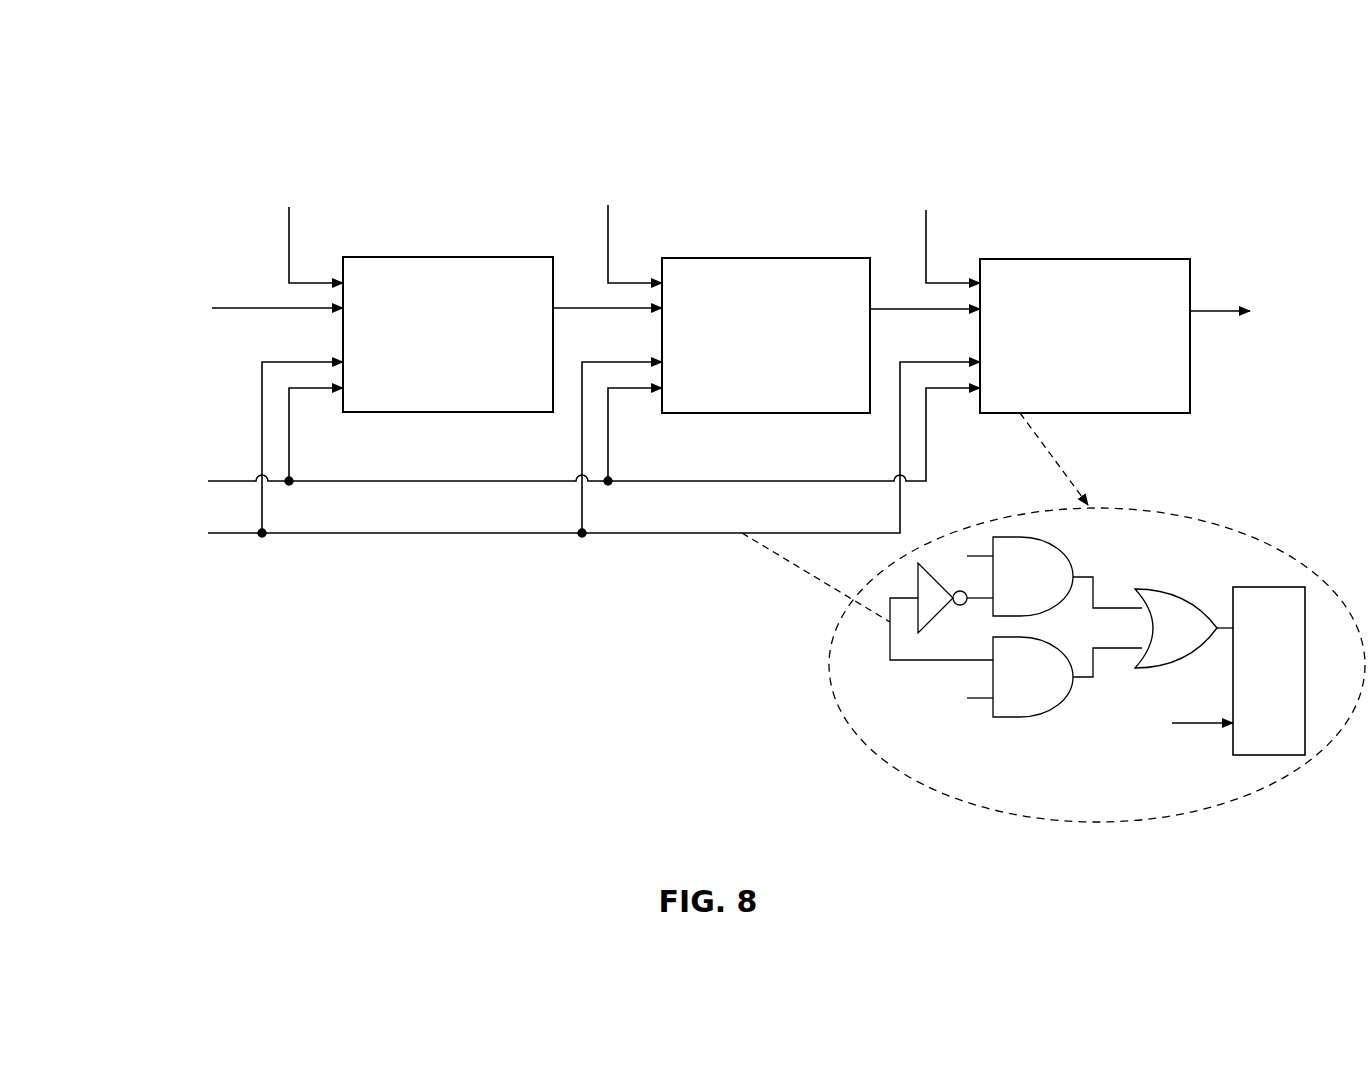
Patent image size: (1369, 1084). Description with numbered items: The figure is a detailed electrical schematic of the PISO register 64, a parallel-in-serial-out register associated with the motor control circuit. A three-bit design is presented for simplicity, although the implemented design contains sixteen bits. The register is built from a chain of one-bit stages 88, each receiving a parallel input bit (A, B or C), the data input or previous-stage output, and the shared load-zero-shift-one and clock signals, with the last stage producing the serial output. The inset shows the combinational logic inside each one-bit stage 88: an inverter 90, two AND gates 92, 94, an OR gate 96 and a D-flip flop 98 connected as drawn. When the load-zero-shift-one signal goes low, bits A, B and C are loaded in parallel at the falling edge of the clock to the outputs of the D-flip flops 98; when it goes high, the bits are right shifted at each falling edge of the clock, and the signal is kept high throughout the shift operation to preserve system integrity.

The PISO register 64 is at (182, 130).
The one-bit stage 88 is at (405, 257).
The inverter 90 is at (918, 623).
The AND gate 92 is at (1042, 542).
The AND gate 94 is at (1028, 718).
The OR gate 96 is at (1178, 592).
The D-flip flop 98 is at (1270, 587).